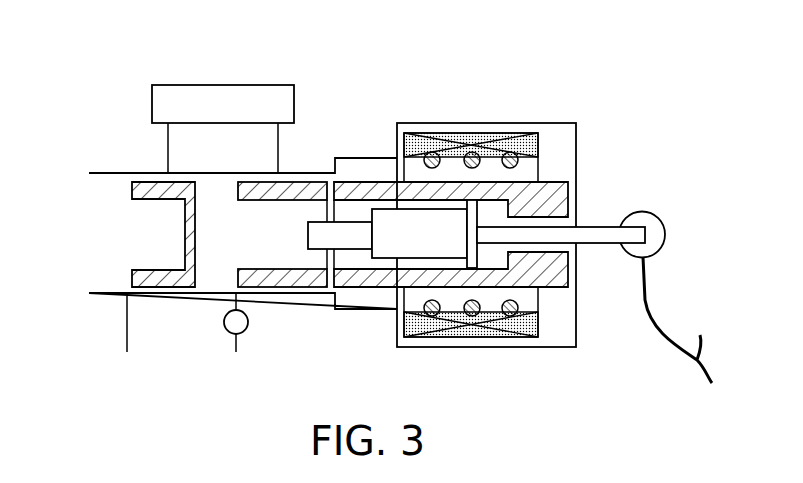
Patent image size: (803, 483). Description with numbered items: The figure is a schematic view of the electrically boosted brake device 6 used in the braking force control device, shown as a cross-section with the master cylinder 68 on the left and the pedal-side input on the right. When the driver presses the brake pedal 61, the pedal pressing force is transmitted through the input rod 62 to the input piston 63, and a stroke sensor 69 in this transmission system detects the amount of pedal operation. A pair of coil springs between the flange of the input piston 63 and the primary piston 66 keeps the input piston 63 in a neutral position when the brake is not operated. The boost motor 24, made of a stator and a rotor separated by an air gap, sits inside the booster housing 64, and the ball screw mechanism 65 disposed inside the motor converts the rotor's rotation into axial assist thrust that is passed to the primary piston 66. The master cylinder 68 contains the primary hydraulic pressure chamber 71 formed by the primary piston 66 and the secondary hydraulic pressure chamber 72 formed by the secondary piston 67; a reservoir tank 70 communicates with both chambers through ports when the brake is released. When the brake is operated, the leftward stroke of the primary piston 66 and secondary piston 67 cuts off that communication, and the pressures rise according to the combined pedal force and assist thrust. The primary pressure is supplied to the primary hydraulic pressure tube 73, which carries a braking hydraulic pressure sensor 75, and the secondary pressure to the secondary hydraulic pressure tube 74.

The electrically boosted brake device 6 is at (337, 52).
The boost motor 24 is at (453, 135).
The brake pedal 61 is at (650, 297).
The input rod 62 is at (587, 226).
The input piston 63 is at (440, 223).
The booster housing 64 is at (472, 348).
The ball screw mechanism 65 is at (488, 173).
The primary piston 66 is at (285, 180).
The secondary piston 67 is at (148, 188).
The master cylinder 68 is at (97, 170).
The stroke sensor 69 is at (650, 223).
The reservoir tank 70 is at (216, 84).
The primary hydraulic pressure chamber 71 is at (257, 246).
The secondary hydraulic pressure chamber 72 is at (144, 246).
The primary hydraulic pressure tube 73 is at (238, 340).
The secondary hydraulic pressure tube 74 is at (127, 322).
The braking hydraulic pressure sensor 75 is at (249, 314).